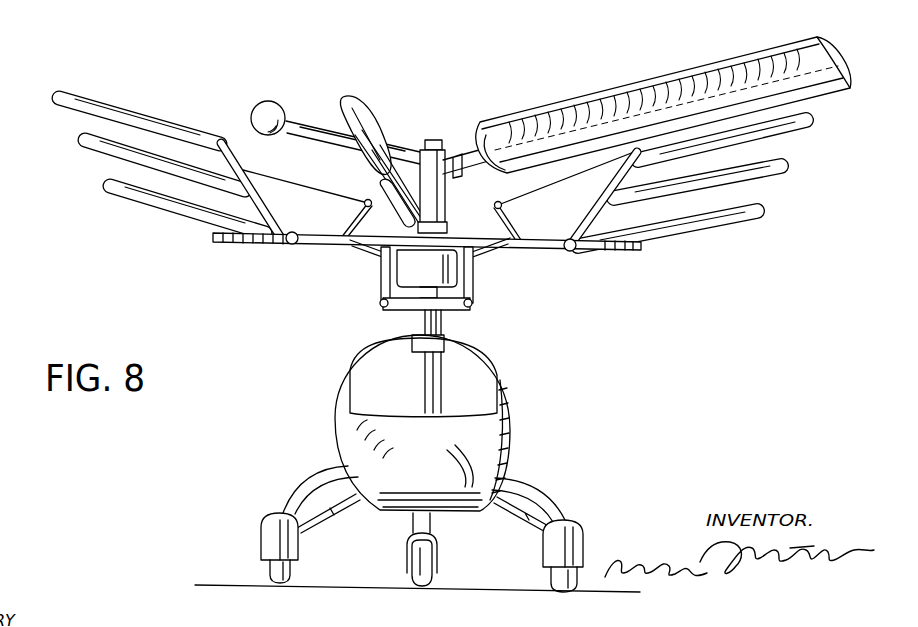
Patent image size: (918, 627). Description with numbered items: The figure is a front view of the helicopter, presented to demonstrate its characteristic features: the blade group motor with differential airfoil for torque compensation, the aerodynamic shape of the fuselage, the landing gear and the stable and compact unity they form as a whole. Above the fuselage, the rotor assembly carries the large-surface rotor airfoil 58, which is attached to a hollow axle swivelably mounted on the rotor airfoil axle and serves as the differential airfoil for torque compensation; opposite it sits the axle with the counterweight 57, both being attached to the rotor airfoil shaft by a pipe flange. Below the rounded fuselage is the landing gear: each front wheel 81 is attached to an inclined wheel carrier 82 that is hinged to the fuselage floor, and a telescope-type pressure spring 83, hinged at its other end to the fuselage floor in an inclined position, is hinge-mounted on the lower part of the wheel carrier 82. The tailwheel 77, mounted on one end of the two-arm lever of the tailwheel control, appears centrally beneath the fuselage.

The counterweight 57 is at (262, 110).
The large-surface rotor airfoil 58 is at (527, 112).
The tailwheel 77 is at (436, 577).
The front wheel 81 is at (281, 569).
The inclined wheel carrier 82 is at (296, 486).
The telescope-type pressure spring 83 is at (314, 501).